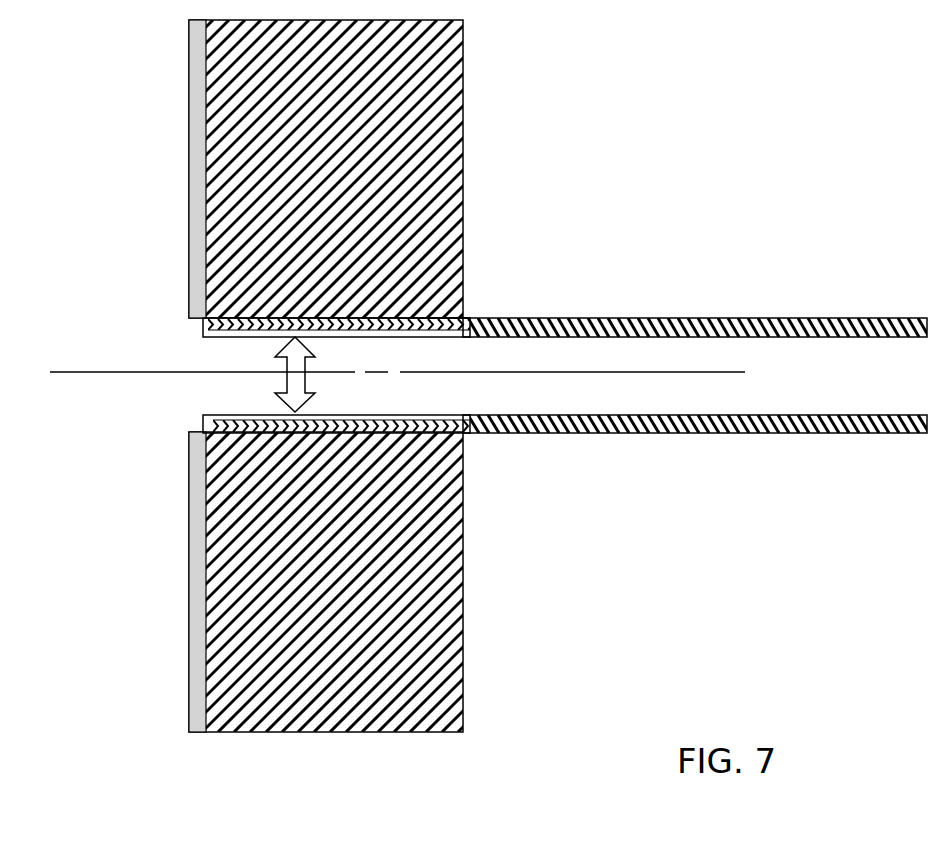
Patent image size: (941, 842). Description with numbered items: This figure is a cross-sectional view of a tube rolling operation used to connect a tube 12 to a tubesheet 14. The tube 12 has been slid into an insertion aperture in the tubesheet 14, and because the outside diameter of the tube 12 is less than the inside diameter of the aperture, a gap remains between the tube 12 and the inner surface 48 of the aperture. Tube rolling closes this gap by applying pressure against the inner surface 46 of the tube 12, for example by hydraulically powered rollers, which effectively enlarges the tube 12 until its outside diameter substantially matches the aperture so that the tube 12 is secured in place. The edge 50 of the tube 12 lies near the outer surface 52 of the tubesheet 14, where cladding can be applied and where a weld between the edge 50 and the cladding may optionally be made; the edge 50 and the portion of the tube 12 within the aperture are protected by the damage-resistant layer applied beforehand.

The tube 12 is at (732, 318).
The tubesheet 14 is at (463, 125).
The inner surface of the tube 46 is at (235, 337).
The inner surface of the tube insertion aperture 48 is at (430, 318).
The edge of the tube 50 is at (196, 326).
The outer surface of the tubesheet 52 is at (200, 237).